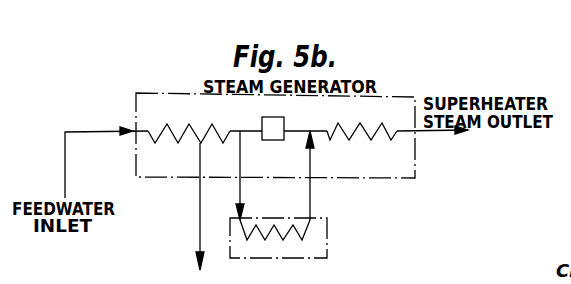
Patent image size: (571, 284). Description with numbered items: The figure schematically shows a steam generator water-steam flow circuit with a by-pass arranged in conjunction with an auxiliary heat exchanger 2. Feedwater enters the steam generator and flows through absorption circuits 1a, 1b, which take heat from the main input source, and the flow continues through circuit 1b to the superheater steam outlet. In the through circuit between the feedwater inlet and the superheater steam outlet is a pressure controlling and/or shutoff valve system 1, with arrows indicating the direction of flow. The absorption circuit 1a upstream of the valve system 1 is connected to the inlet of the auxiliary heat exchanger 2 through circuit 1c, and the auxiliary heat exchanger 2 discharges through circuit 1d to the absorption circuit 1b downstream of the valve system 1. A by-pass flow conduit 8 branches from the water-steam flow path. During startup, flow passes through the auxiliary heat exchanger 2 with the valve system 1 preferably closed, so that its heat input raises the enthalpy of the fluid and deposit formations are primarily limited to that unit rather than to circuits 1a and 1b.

The pressure controlling and/or shutoff valve system 1 is at (284, 118).
The absorption circuit 1a is at (176, 144).
The absorption circuit 1b is at (368, 138).
The circuit 1c is at (240, 190).
The circuit 1d is at (310, 197).
The auxiliary heat exchanger 2 is at (327, 238).
The by-pass flow conduit 8 is at (198, 227).